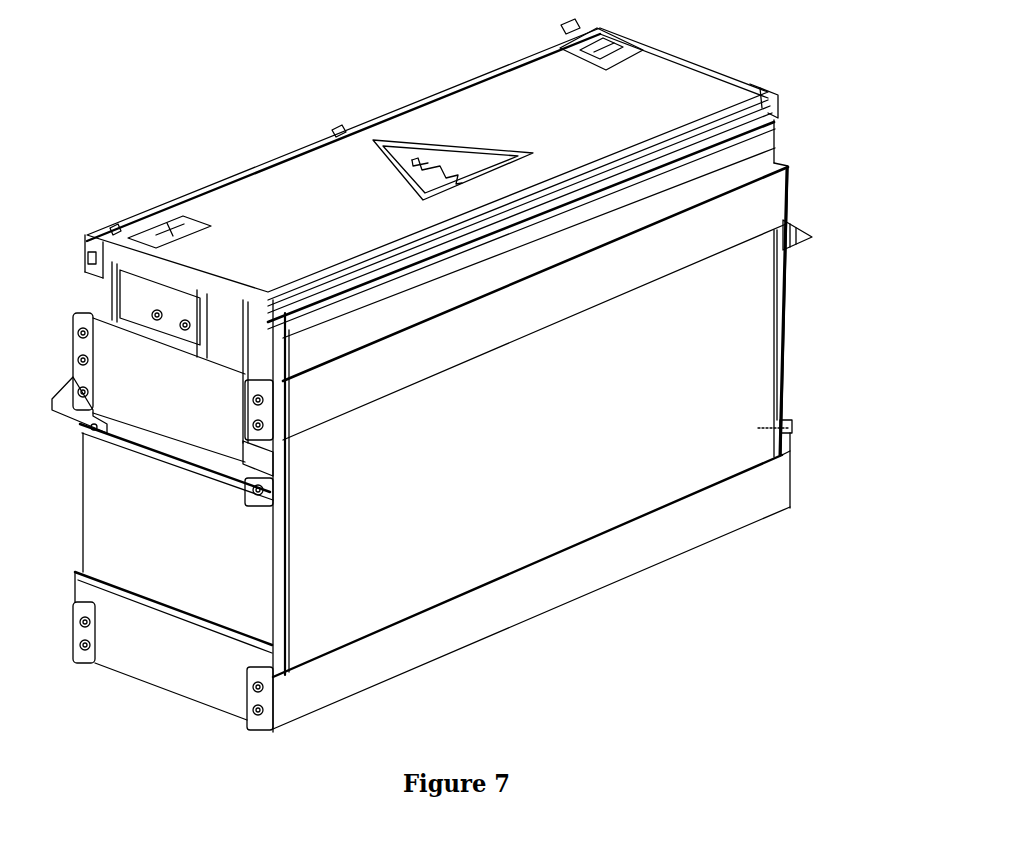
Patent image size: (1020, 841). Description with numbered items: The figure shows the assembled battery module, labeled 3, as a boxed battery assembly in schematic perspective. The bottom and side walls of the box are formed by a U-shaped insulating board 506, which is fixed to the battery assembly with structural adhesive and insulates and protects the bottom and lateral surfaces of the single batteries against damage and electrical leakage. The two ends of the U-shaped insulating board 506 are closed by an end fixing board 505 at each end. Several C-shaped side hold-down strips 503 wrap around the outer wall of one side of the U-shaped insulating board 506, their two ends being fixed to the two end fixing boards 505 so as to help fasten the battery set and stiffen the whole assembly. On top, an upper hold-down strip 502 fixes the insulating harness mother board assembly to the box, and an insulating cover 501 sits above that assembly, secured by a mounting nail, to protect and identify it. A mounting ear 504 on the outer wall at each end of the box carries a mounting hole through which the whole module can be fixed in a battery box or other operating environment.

The battery module 3 is at (768, 115).
The insulating cover 501 is at (505, 90).
The upper hold-down strip 502 is at (90, 268).
The side hold-down strip 503 is at (790, 203).
The mounting ear 504 is at (800, 233).
The end fixing board 505 is at (780, 373).
The U-shaped insulating board 506 is at (790, 422).